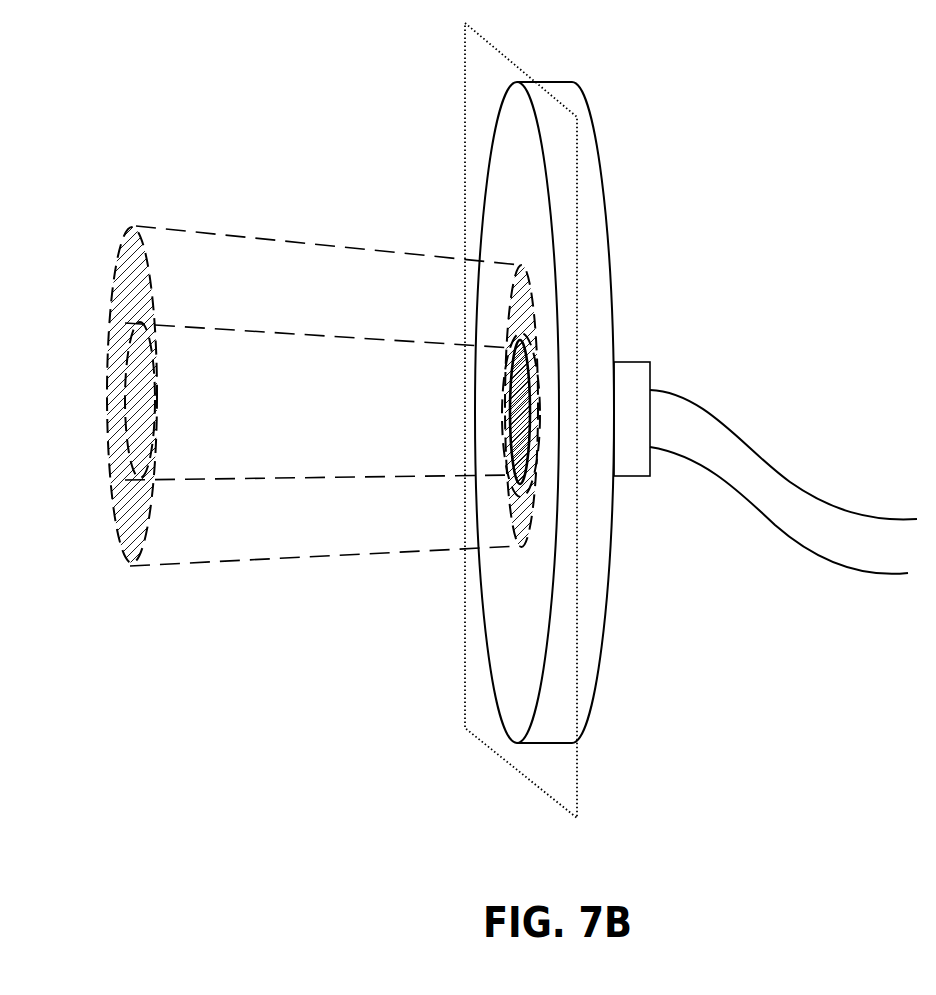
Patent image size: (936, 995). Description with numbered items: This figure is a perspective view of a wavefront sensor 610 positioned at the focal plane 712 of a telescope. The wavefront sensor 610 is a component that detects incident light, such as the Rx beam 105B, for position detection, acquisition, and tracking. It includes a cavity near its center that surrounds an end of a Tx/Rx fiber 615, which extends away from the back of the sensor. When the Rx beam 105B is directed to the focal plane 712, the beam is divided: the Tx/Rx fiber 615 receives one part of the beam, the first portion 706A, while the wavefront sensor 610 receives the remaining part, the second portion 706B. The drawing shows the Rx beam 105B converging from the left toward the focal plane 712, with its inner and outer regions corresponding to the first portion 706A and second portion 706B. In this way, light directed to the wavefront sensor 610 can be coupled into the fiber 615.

The Rx beam 105B is at (137, 226).
The first portion 706A is at (230, 368).
The second portion 706B is at (245, 517).
The wavefront sensor 610 is at (589, 192).
The Tx/Rx fiber 615 is at (750, 473).
The focal plane 712 is at (577, 780).